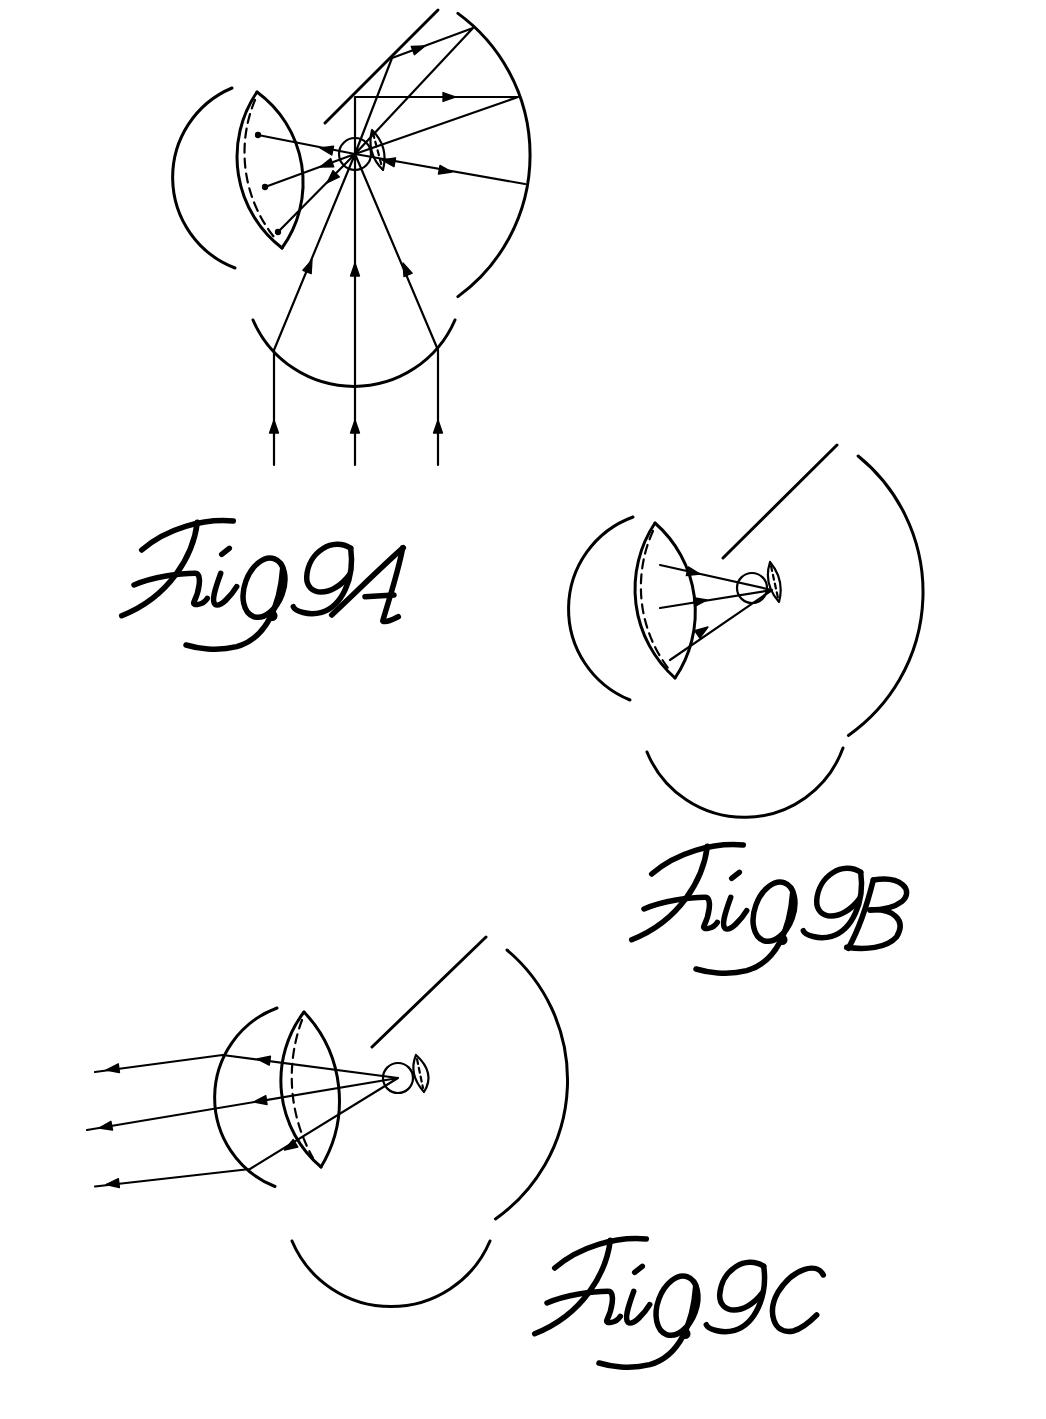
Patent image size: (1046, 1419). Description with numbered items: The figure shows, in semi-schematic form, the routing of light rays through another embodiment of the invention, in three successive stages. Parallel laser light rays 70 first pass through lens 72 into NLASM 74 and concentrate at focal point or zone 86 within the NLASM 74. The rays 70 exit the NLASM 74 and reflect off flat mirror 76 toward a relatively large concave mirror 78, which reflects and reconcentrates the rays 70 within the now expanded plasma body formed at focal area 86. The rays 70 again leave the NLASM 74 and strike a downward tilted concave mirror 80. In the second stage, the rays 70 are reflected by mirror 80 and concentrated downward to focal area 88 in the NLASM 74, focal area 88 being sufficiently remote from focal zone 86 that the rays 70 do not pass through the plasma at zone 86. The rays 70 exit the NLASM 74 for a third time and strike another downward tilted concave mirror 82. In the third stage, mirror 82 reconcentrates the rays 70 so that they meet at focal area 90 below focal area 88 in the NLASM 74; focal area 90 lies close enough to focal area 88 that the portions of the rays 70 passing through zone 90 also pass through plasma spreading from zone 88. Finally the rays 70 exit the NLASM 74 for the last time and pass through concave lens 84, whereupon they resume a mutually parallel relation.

In FIG. 9A, the parallel laser light rays 70 is at (440, 432).
In FIG. 9B, the parallel laser light rays 70 is at (720, 580).
In FIG. 9C, the parallel laser light rays 70 is at (120, 1068).
In FIG. 9A, the lens 72 is at (445, 337).
In FIG. 9B, the lens 72 is at (820, 787).
In FIG. 9C, the lens 72 is at (401, 1310).
In FIG. 9A, the NLASM 74 is at (370, 170).
In FIG. 9B, the NLASM 74 is at (757, 605).
In FIG. 9C, the NLASM 74 is at (406, 1096).
In FIG. 9A, the flat mirror 76 is at (368, 80).
In FIG. 9B, the flat mirror 76 is at (782, 497).
In FIG. 9C, the flat mirror 76 is at (416, 1002).
In FIG. 9A, the concave mirror 78 is at (530, 137).
In FIG. 9B, the concave mirror 78 is at (908, 510).
In FIG. 9C, the concave mirror 78 is at (563, 1037).
In FIG. 9A, the downward tilted concave mirror 80 is at (265, 94).
In FIG. 9B, the downward tilted concave mirror 80 is at (653, 660).
In FIG. 9C, the downward tilted concave mirror 80 is at (306, 1156).
In FIG. 9A, the downward tilted concave mirror 82 is at (386, 165).
In FIG. 9B, the downward tilted concave mirror 82 is at (783, 592).
In FIG. 9C, the downward tilted concave mirror 82 is at (430, 1072).
In FIG. 9A, the concave lens 84 is at (198, 248).
In FIG. 9B, the concave lens 84 is at (568, 605).
In FIG. 9C, the concave lens 84 is at (240, 1033).
In FIG. 9A, the focal point or zone 86 is at (342, 147).
In FIG. 9B, the focal area 88 is at (752, 573).
In FIG. 9C, the focal area 90 is at (406, 1056).